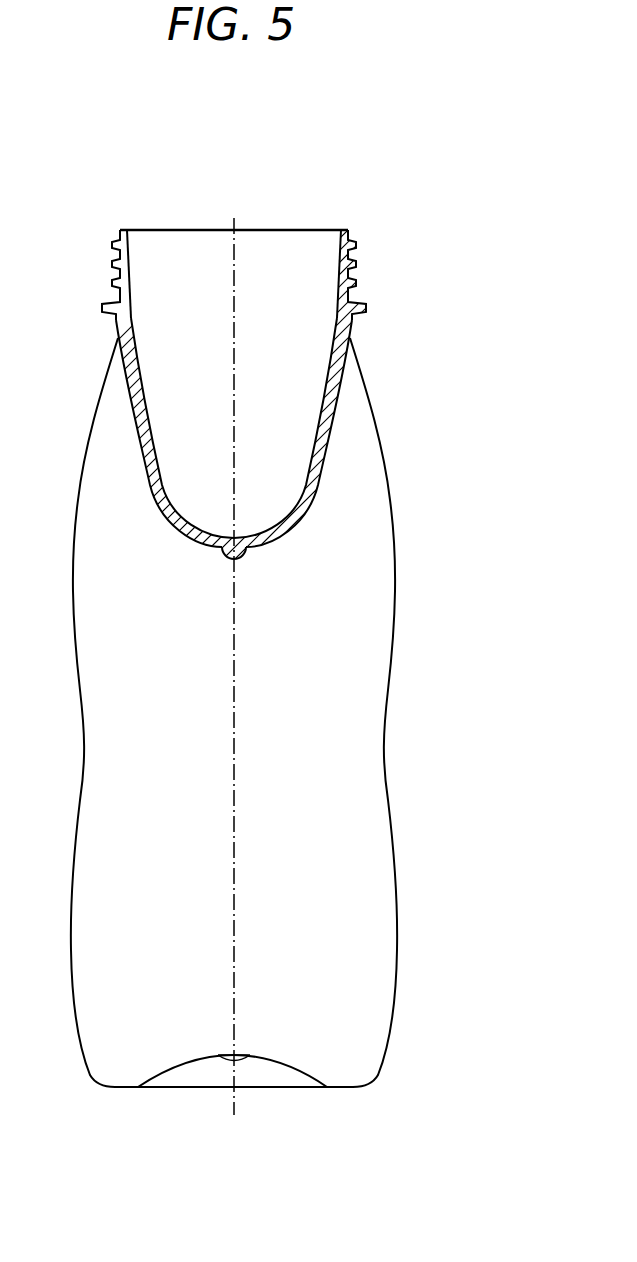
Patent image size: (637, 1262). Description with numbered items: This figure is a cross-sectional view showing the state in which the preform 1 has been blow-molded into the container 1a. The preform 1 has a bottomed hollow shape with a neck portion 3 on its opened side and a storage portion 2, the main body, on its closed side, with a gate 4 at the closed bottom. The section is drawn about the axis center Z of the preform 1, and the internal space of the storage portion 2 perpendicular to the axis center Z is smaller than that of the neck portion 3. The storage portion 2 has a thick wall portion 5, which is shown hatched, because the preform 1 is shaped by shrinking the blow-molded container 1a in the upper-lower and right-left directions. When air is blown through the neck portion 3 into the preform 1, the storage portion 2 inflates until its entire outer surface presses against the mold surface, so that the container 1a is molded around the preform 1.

The preform 1 is at (372, 263).
The container 1a is at (393, 585).
The storage portion 2 is at (318, 382).
The neck portion 3 is at (352, 250).
The gate 4 is at (240, 548).
The wall portion 5 is at (325, 427).
The axis center Z is at (234, 218).